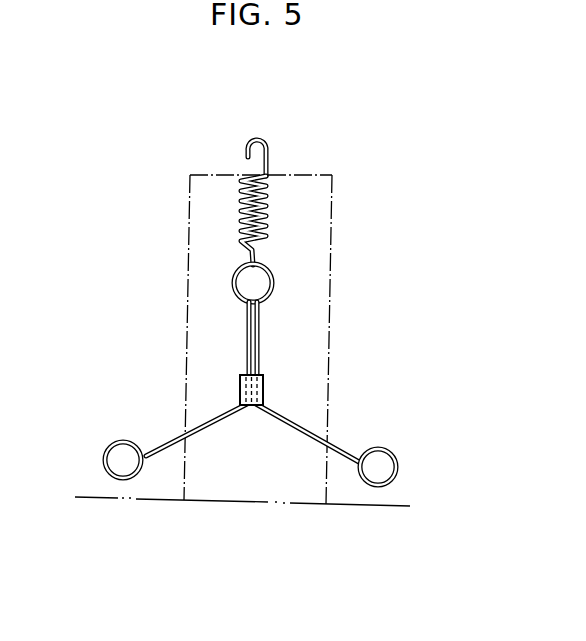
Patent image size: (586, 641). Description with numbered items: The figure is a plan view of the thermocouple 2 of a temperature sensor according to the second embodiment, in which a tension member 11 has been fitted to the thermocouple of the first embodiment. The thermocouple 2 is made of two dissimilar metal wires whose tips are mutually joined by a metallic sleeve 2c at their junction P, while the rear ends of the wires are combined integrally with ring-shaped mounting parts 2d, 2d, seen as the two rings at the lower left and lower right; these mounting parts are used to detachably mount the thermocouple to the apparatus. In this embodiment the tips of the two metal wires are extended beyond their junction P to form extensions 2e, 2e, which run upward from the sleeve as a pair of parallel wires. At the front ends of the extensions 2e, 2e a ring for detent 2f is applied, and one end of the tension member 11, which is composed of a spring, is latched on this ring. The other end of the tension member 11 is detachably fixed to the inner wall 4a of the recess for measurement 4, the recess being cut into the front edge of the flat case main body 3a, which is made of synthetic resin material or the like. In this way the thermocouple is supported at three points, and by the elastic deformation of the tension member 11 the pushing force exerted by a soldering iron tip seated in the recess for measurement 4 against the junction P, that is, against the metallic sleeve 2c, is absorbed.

The tension member 11 is at (245, 205).
The thermocouple 2 is at (213, 411).
The metallic sleeve 2c is at (263, 392).
The ring-shaped mounting parts 2d is at (108, 446).
The extensions 2e is at (247, 341).
The rings for detent 2f is at (232, 281).
The case main body 3a is at (150, 500).
The recess for measurement 4 is at (270, 489).
The inner wall of the recess for measurement 4a is at (313, 176).
The junction P is at (249, 410).